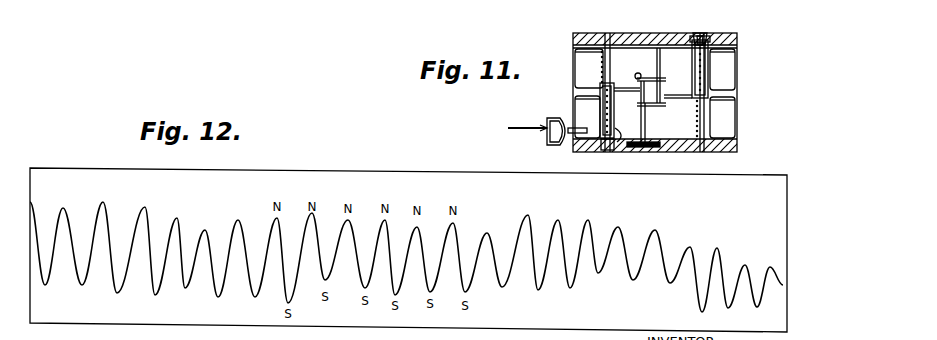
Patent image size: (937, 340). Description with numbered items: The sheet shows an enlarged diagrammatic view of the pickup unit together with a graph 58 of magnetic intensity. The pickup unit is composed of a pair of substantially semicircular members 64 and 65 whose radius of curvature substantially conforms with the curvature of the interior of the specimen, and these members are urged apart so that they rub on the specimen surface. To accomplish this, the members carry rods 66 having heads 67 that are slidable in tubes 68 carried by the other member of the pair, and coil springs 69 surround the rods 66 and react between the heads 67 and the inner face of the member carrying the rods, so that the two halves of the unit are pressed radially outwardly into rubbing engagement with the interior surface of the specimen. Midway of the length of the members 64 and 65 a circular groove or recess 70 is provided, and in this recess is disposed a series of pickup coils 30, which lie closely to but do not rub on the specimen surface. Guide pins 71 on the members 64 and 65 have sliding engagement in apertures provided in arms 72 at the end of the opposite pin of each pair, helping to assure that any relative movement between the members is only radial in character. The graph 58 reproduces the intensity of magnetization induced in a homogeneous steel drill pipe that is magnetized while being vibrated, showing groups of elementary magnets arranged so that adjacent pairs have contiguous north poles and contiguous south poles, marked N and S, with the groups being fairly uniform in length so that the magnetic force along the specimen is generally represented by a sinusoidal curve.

In FIG. 11, the pickup coils 30 is at (661, 36).
In FIG. 12, the graph 58 is at (528, 217).
In FIG. 11, the semicircular member 64 is at (727, 60).
In FIG. 11, the semicircular member 65 is at (727, 127).
In FIG. 11, the rods 66 is at (612, 75).
In FIG. 11, the heads 67 is at (701, 43).
In FIG. 11, the tubes 68 is at (600, 105).
In FIG. 11, the coil springs 69 is at (610, 80).
In FIG. 11, the circular groove or recess 70 is at (701, 37).
In FIG. 11, the guide pins 71 is at (661, 63).
In FIG. 11, the arms 72 is at (658, 73).